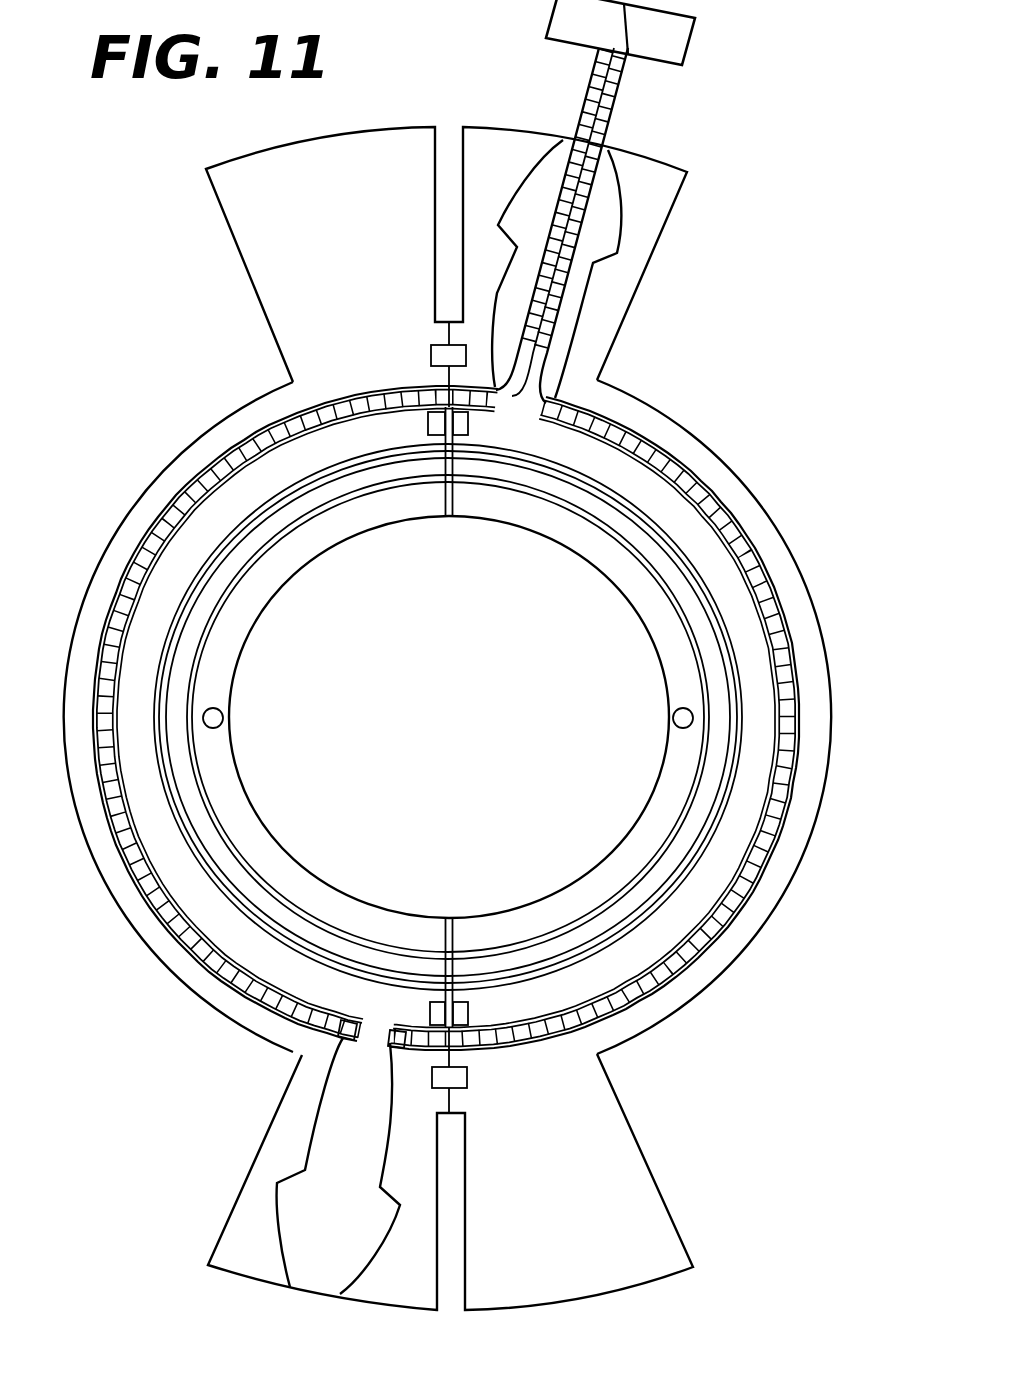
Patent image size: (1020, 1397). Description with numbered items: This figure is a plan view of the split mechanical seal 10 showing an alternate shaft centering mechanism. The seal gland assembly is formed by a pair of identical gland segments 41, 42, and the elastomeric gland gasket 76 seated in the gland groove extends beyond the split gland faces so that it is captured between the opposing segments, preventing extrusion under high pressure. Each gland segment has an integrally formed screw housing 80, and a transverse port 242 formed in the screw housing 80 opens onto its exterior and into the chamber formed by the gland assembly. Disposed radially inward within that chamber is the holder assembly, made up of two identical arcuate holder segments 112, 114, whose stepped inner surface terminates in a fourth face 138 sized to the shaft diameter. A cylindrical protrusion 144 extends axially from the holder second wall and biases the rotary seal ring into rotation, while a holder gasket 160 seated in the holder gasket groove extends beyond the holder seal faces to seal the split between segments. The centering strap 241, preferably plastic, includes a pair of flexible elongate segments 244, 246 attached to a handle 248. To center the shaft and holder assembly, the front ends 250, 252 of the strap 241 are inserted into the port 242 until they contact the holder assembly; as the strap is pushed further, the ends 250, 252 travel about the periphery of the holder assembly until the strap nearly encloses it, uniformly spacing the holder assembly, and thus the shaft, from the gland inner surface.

The split mechanical seal 10 is at (210, 257).
The gland segment 41 is at (160, 466).
The gland segment 42 is at (722, 458).
The gland gasket 76 is at (467, 1078).
The screw housing 80 is at (320, 131).
The holder segment 112 is at (592, 568).
The holder segment 114 is at (291, 580).
The fourth face 138 is at (282, 842).
The cylindrical protrusion 144 is at (224, 718).
The holder gasket 160 is at (468, 426).
The centering strap 241 is at (620, 115).
The transverse port 242 is at (605, 182).
The flexible elongate segment 244 is at (598, 82).
The flexible elongate segment 246 is at (618, 78).
The handle 248 is at (663, 37).
The strap front end 250 is at (300, 1057).
The strap front end 252 is at (400, 1040).